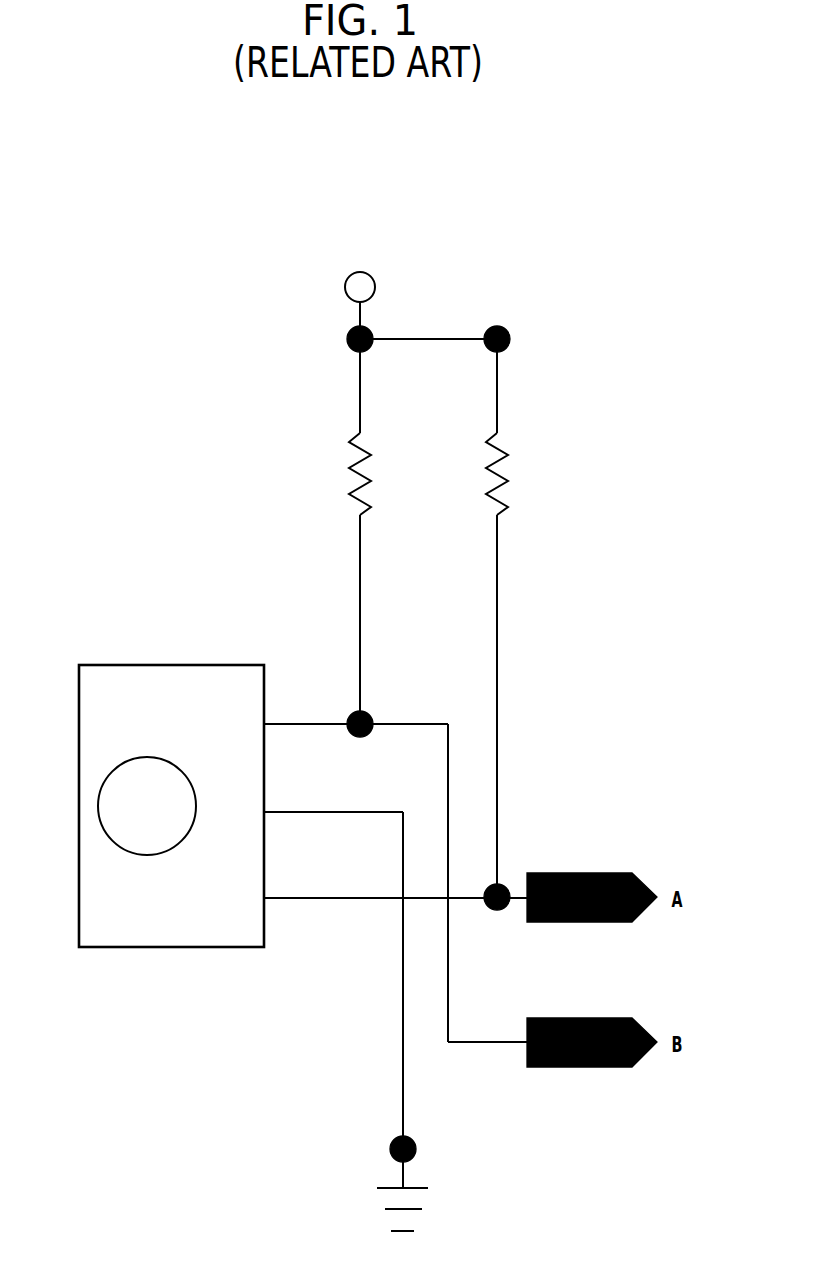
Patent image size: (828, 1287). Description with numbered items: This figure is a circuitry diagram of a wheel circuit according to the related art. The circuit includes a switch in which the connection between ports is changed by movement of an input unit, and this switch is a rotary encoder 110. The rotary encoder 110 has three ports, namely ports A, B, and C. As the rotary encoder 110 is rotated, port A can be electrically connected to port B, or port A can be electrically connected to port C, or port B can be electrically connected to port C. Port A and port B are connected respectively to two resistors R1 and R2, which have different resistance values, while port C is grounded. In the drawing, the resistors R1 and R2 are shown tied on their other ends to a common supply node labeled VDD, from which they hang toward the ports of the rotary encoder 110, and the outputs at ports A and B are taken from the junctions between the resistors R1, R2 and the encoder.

The rotary encoder 110 is at (113, 664).
The resistor R1 is at (338, 531).
The resistor R2 is at (483, 618).
The supply voltage VDD is at (406, 292).